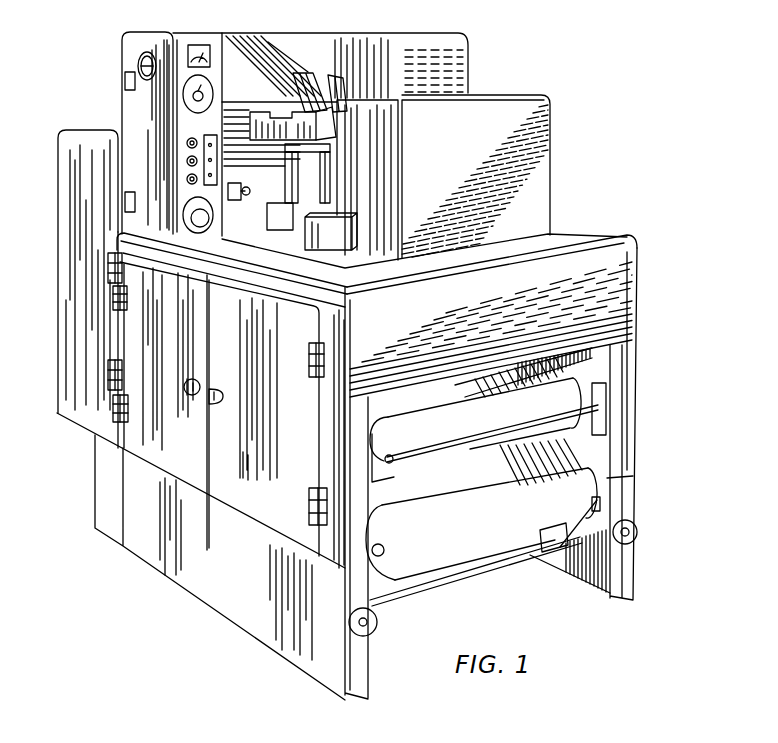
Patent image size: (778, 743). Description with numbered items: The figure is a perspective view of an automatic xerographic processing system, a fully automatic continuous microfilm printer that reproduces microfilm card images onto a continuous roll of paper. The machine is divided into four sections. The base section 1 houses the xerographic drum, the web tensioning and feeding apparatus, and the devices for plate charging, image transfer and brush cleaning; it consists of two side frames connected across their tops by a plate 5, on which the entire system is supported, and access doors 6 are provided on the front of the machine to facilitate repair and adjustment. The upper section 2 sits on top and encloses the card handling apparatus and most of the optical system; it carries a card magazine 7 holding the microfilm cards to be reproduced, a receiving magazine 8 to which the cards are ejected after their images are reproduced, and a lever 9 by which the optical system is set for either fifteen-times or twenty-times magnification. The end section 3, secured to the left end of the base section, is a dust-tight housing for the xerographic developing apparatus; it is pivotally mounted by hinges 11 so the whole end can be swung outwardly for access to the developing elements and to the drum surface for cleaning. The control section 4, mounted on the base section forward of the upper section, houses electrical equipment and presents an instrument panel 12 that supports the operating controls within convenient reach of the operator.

The base section 1 is at (625, 327).
The upper section 2 is at (512, 108).
The end section 3 is at (62, 173).
The control section 4 is at (153, 31).
The plate 5 is at (253, 243).
The doors 6 is at (217, 494).
The card magazine 7 is at (345, 86).
The receiving magazine 8 is at (310, 181).
The lever 9 is at (249, 194).
The hinges 11 is at (109, 283).
The instrument panel 12 is at (220, 48).